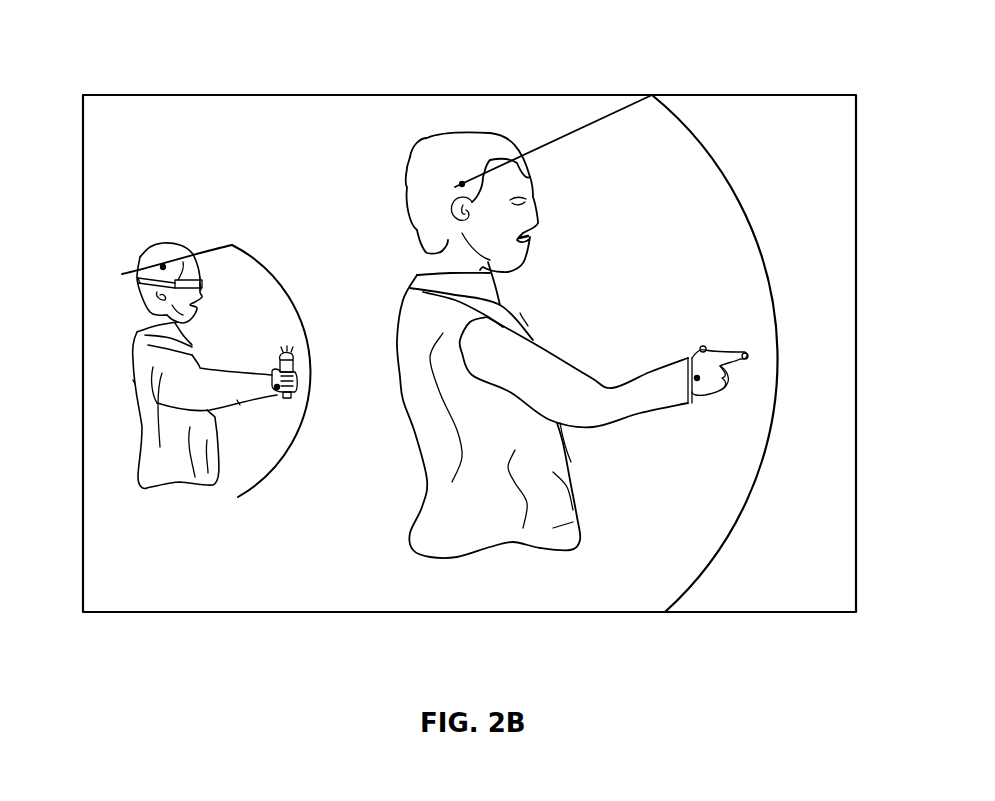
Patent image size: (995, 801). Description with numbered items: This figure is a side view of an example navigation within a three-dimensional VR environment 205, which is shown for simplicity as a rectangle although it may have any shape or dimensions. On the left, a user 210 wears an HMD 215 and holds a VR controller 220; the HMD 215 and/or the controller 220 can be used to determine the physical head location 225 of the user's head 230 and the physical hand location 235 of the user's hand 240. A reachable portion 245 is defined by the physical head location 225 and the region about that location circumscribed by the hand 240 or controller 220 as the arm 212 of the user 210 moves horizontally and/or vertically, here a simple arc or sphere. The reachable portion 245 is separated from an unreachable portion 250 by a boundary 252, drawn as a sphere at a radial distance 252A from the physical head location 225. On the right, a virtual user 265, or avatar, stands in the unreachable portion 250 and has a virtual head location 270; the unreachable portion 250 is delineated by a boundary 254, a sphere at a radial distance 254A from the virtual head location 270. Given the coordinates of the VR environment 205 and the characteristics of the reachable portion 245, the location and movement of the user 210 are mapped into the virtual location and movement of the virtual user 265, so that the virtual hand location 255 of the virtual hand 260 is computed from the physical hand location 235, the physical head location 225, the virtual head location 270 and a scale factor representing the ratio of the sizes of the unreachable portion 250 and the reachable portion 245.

The three-dimensional VR environment 205 is at (723, 95).
The user 210 is at (142, 382).
The arm 212 is at (237, 400).
The HMD 215 is at (215, 280).
The VR controller 220 is at (290, 352).
The physical head location 225 is at (140, 272).
The user's head 230 is at (163, 265).
The physical hand location 235 is at (292, 398).
The user's hand 240 is at (272, 348).
The reachable portion 245 is at (190, 376).
The unreachable portion 250 is at (572, 303).
The boundary 252 is at (260, 262).
The radial distance 252A is at (210, 250).
The boundary 254 is at (727, 183).
The radial distance 254A is at (607, 123).
The virtual hand location 255 is at (697, 375).
The virtual hand 260 is at (708, 395).
The virtual user 265 is at (520, 313).
The virtual head location 270 is at (462, 182).